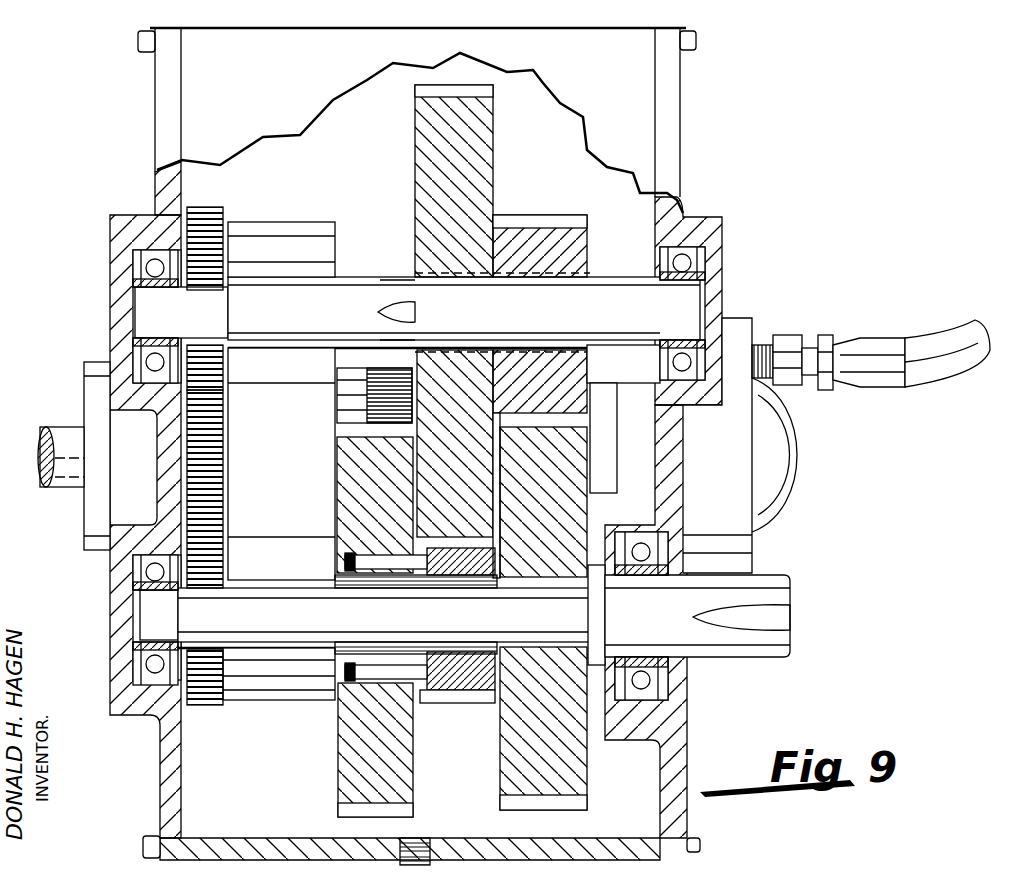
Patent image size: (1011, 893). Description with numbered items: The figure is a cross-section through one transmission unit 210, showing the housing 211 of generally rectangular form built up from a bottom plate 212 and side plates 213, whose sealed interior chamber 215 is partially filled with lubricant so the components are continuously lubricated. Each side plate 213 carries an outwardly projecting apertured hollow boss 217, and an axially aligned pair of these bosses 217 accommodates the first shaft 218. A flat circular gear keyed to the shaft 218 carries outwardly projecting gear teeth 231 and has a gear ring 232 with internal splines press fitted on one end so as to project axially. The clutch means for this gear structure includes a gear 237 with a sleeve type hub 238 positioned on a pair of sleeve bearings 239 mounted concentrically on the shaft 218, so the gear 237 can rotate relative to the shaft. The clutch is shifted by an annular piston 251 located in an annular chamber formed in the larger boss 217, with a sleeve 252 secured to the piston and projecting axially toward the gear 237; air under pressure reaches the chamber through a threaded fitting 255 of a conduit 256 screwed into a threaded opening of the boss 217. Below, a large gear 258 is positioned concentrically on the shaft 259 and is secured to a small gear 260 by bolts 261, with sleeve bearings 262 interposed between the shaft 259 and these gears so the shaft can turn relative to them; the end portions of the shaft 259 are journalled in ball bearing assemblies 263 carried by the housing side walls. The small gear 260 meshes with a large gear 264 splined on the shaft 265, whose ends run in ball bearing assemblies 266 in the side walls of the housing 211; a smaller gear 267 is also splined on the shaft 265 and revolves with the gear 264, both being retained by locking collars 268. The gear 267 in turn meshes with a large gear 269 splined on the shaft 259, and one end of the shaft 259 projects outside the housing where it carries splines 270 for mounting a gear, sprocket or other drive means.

The transmission unit 210 is at (730, 55).
The housing 211 is at (692, 186).
The bottom plate 212 is at (255, 838).
The side plate 213 is at (157, 118).
The chamber 215 is at (242, 778).
The boss 217 is at (84, 544).
The first shaft 218 is at (56, 427).
The gear teeth 231 is at (205, 207).
The gear ring 232 is at (272, 228).
The gear 237 is at (410, 362).
The sleeve type hub 238 is at (374, 395).
The sleeve bearing 239 is at (358, 392).
The annular piston 251 is at (617, 460).
The sleeve 252 is at (594, 388).
The threaded fitting 255 is at (793, 340).
The conduit 256 is at (960, 376).
The large gear 258 is at (340, 740).
The shaft 259 is at (285, 626).
The small gear 260 is at (468, 692).
The bolt 261 is at (368, 636).
The sleeve bearing 262 is at (432, 588).
The ball bearing assembly 263 is at (133, 666).
The large gear 264 is at (415, 122).
The shaft 265 is at (268, 326).
The ball bearing assembly 266 is at (702, 270).
The smaller gear 267 is at (536, 215).
The locking collar 268 is at (412, 272).
The large gear 269 is at (502, 792).
The splines 270 is at (792, 605).